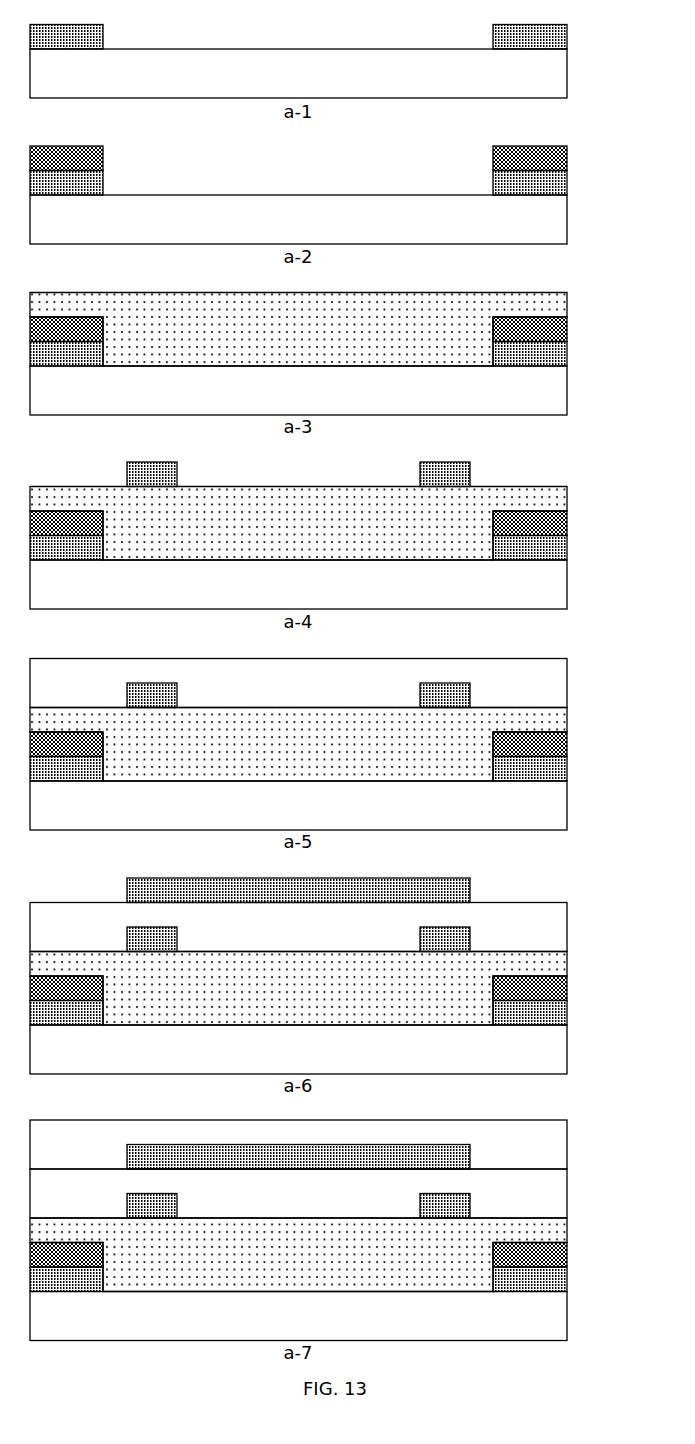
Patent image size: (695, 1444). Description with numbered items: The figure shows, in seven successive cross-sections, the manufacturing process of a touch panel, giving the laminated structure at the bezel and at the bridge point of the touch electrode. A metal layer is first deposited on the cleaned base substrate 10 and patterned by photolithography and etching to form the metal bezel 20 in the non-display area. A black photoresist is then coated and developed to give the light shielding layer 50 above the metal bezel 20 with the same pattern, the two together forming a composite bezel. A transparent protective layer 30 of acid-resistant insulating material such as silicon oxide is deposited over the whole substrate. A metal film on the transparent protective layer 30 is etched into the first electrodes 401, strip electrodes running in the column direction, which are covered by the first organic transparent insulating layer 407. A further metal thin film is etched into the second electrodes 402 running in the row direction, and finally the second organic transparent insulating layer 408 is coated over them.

The base substrate 10 is at (534, 74).
The metal bezel 20 is at (534, 37).
The transparent protective layer 30 is at (534, 305).
The light shielding layer 50 is at (567, 158).
The first electrodes 401 is at (458, 474).
The second electrodes 402 is at (458, 890).
The first organic transparent insulating layer 407 is at (534, 670).
The second organic transparent insulating layer 408 is at (534, 1133).